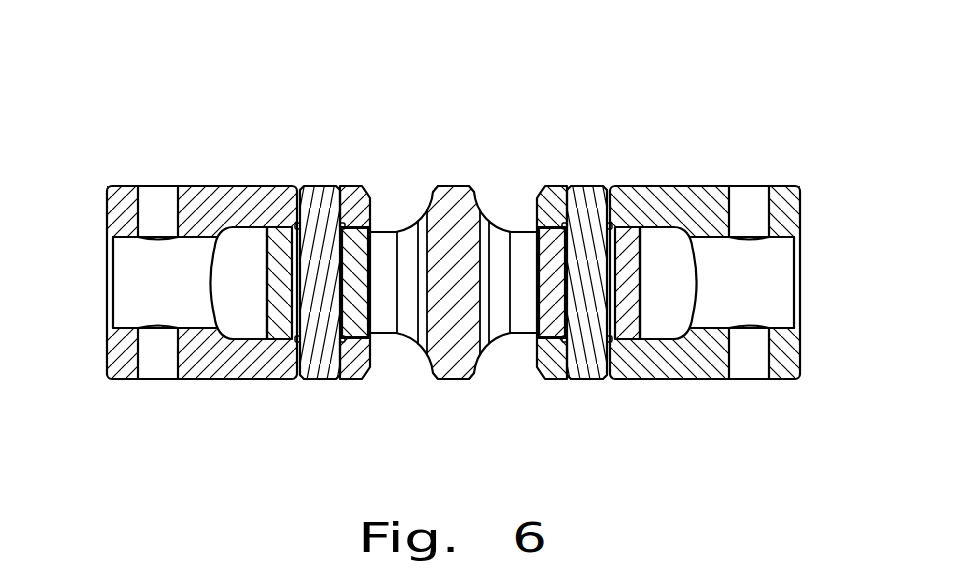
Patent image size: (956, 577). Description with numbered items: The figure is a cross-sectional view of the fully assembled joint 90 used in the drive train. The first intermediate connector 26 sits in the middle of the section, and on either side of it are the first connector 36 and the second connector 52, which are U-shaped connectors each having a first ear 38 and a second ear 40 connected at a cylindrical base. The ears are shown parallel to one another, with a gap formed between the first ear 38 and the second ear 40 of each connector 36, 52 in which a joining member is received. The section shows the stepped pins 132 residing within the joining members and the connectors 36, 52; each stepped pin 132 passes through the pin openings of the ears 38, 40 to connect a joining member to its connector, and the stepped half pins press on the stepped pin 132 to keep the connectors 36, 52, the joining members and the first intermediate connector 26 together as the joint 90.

The joint 90 is at (472, 127).
The second connector 52 is at (125, 186).
The first connector 36 is at (782, 186).
The first ear 38 is at (245, 186).
The second ear 40 is at (245, 379).
The stepped pin 132 is at (318, 197).
The first intermediate connector 26 is at (457, 365).